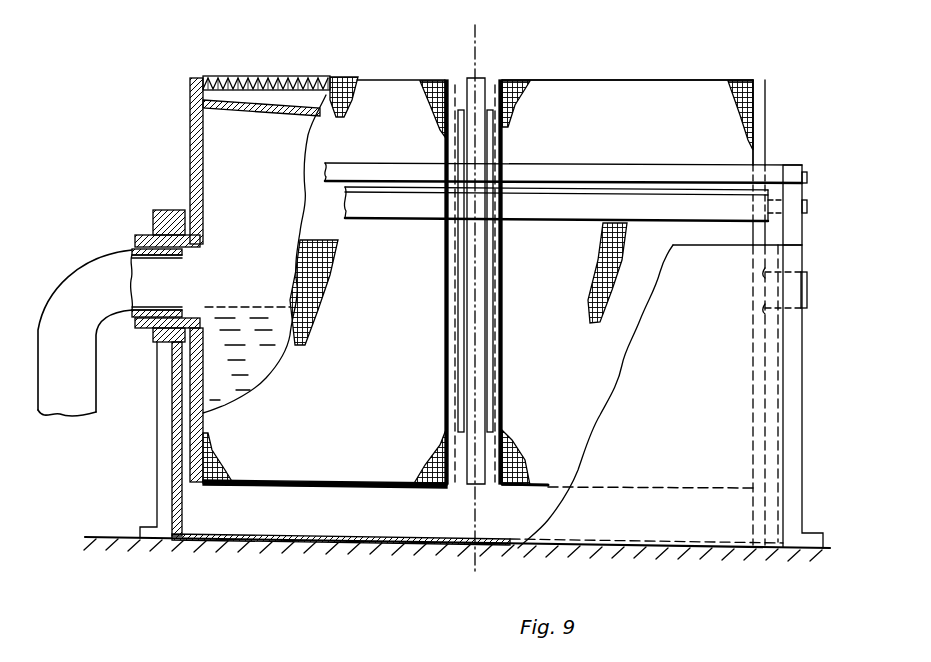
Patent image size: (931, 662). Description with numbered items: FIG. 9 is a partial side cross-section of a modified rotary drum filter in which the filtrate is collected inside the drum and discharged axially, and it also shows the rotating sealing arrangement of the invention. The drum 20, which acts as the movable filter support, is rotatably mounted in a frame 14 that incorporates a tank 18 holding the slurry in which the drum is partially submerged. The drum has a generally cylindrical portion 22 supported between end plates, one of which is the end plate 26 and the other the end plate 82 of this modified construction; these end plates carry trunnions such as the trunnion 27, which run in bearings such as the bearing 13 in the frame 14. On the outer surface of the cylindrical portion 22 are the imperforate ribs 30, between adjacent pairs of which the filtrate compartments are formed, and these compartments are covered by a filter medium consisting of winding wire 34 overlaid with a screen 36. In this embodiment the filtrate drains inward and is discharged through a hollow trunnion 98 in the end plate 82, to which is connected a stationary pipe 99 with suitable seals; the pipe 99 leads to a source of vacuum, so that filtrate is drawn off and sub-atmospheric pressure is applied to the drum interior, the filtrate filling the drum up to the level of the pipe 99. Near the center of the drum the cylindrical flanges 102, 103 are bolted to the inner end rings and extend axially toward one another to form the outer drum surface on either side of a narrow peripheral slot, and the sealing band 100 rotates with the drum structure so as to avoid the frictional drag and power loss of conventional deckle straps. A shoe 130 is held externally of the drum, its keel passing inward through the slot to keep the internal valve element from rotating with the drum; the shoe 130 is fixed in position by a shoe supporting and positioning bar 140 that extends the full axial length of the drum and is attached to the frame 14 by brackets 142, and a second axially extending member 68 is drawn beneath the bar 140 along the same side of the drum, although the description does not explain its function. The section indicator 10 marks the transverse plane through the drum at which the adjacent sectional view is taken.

The section line 10 is at (500, 42).
The bearing 13 is at (158, 482).
The frame 14 is at (803, 427).
The tank 18 is at (173, 392).
The drum 20 is at (768, 81).
The cylindrical portion 22 is at (249, 111).
The end plate 26 is at (767, 147).
The trunnion 27 is at (807, 280).
The rib 30 is at (302, 111).
The winding wire 34 is at (228, 77).
The screen 36 is at (304, 77).
The heating tube 68 is at (590, 217).
The end plate 82 is at (191, 121).
The hollow trunnion 98 is at (200, 248).
The stationary pipe 99 is at (98, 235).
The sealing band 100 is at (493, 82).
The cylindrical flange 102 is at (455, 85).
The cylindrical flange 103 is at (505, 78).
The shoe 130 is at (489, 153).
The shoe supporting and positioning bar 140 is at (647, 174).
The bracket 142 is at (793, 192).